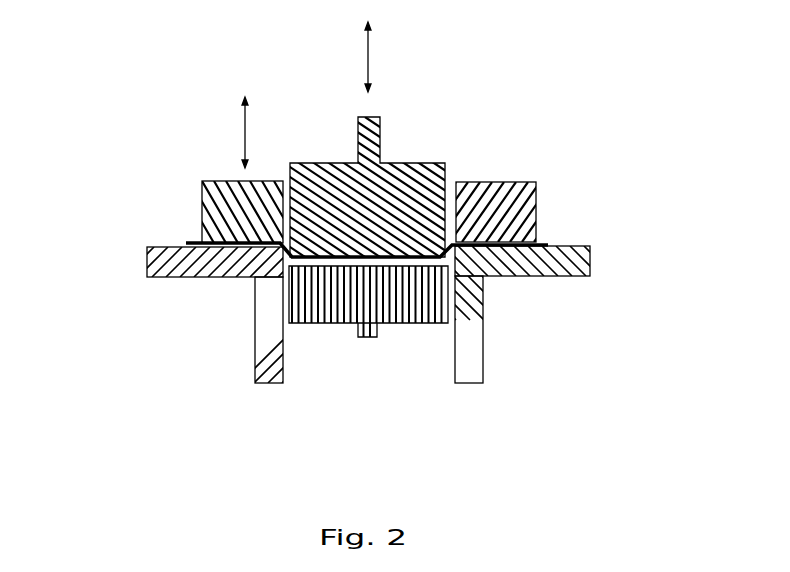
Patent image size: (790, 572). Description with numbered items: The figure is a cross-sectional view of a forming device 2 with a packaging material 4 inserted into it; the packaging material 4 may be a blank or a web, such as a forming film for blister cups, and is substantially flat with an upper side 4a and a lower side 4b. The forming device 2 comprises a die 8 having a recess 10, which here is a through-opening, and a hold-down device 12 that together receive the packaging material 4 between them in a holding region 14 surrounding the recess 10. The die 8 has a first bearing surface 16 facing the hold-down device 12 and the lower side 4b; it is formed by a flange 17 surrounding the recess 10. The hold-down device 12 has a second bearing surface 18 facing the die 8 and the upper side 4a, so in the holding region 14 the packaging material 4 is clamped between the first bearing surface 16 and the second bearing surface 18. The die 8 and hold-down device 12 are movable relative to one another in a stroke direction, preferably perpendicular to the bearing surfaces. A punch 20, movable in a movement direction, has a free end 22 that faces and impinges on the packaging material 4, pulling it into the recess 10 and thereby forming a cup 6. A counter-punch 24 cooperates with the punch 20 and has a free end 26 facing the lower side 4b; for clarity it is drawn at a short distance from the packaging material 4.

The forming device 2 is at (365, 245).
The packaging material 4 is at (545, 165).
The upper side 4a is at (540, 242).
The lower side 4b is at (370, 369).
The cup 6 is at (438, 258).
The die 8 is at (257, 378).
The recess 10 is at (251, 343).
The hold-down device 12 is at (195, 141).
The holding region 14 is at (186, 236).
The first bearing surface 16 is at (163, 247).
The flange 17 is at (577, 247).
The second bearing surface 18 is at (201, 216).
The punch 20 is at (410, 163).
The free end 22 is at (370, 366).
The counter-punch 24 is at (443, 322).
The free end 26 is at (247, 343).